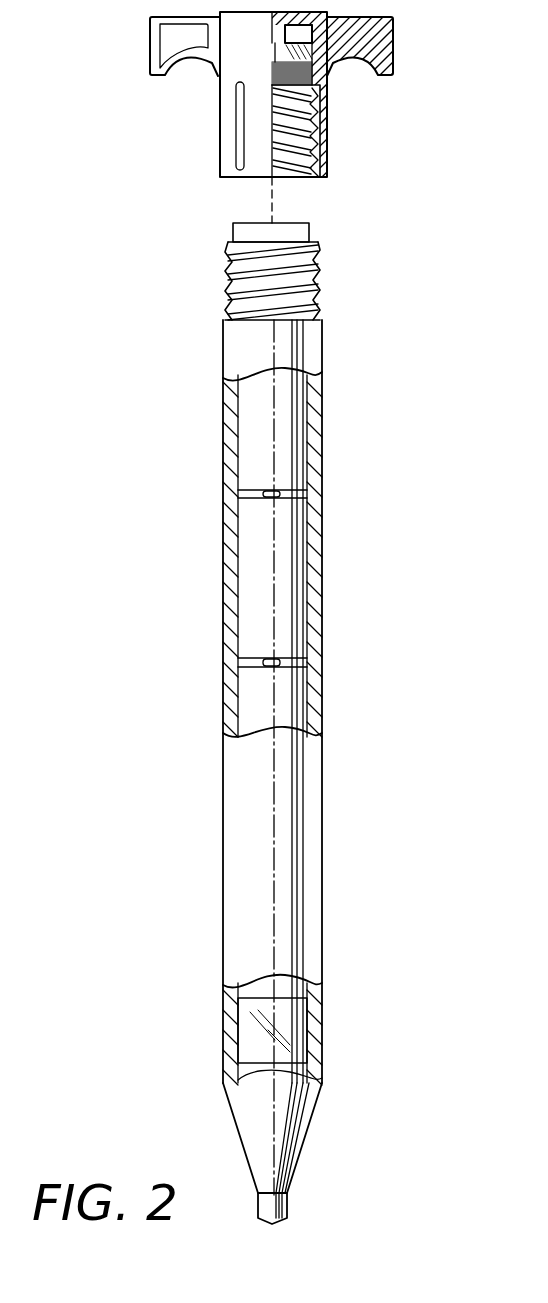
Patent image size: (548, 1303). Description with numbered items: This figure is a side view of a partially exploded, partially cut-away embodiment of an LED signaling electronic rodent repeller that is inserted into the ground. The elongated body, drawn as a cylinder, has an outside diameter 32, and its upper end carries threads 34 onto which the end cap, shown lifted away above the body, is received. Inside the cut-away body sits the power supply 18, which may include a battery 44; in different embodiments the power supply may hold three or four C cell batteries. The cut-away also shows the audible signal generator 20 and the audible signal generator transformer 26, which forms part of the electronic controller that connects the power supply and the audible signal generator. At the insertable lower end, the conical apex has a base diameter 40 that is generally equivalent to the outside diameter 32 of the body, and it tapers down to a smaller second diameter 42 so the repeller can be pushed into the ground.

The power supply 18 is at (257, 545).
The audible signal generator 20 is at (207, 1039).
The audible signal generator transformer 26 is at (245, 1030).
The outside diameter 32 is at (187, 849).
The threads 34 is at (228, 262).
The base diameter 40 is at (187, 1083).
The second diameter 42 is at (220, 1205).
The battery 44 is at (293, 617).